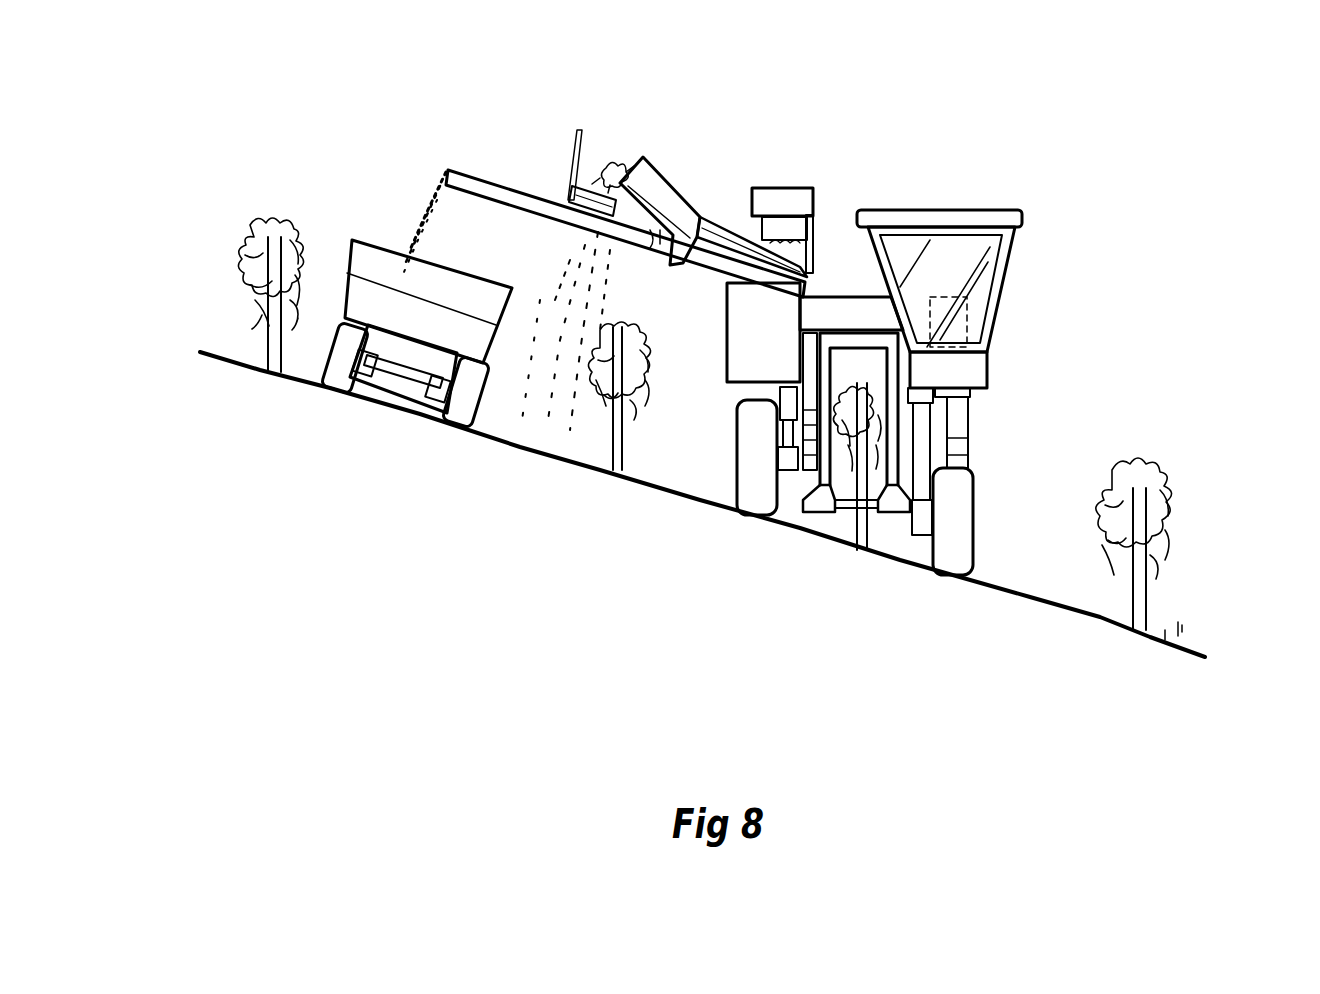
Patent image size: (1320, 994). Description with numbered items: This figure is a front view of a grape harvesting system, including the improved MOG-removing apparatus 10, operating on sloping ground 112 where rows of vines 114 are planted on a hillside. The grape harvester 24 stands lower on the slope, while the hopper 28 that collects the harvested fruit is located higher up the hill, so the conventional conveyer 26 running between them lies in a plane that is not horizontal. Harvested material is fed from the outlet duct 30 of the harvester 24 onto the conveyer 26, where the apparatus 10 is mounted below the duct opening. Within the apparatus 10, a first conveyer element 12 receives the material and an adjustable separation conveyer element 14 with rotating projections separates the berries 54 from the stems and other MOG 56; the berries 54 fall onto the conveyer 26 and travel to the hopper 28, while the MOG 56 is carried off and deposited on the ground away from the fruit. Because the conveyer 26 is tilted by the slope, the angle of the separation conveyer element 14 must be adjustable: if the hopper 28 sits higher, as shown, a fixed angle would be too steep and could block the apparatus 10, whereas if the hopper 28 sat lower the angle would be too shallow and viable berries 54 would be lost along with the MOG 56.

The apparatus 10 is at (694, 135).
The first conveyer element 12 is at (717, 224).
The adjustable separation conveyer element 14 is at (657, 183).
The grape harvester 24 is at (1040, 267).
The conveyer 26 is at (512, 185).
The hopper 28 is at (424, 320).
The outlet duct 30 is at (792, 197).
The berries 54 is at (420, 217).
The MOG 56 is at (602, 292).
The sloping ground 112 is at (563, 450).
The vines 114 is at (232, 250).